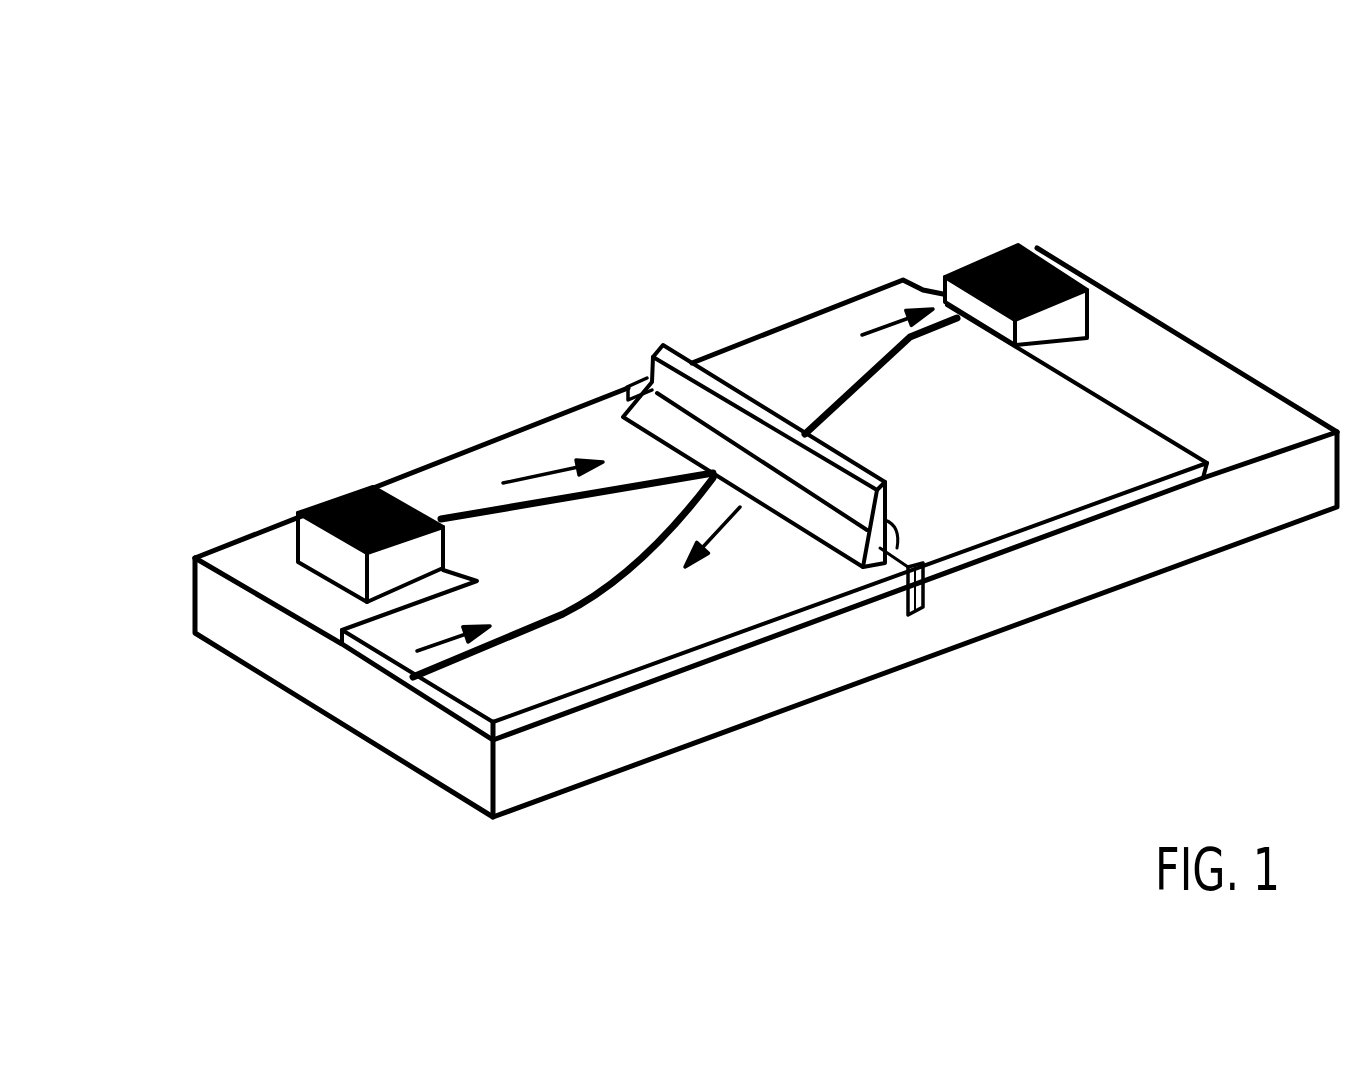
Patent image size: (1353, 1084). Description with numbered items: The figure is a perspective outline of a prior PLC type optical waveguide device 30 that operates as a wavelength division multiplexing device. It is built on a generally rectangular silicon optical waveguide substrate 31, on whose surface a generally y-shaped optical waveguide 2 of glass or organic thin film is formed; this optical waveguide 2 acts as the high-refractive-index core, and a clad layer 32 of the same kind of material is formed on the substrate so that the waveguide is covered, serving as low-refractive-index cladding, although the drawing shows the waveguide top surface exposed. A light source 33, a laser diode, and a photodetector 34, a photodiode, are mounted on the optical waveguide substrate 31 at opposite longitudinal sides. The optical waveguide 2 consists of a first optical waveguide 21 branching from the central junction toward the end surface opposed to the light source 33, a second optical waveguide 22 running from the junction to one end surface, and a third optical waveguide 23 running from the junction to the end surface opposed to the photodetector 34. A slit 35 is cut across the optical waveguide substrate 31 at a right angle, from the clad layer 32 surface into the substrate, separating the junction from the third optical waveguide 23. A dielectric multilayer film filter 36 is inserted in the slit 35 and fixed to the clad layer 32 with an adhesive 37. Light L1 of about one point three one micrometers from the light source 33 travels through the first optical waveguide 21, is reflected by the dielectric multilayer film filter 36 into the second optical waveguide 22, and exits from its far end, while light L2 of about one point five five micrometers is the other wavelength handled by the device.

The optical waveguide 2 is at (637, 482).
The first optical waveguide 21 is at (467, 502).
The second optical waveguide 22 is at (517, 640).
The third optical waveguide 23 is at (845, 392).
The optical waveguide device 30 is at (748, 491).
The optical waveguide substrate 31 is at (1085, 568).
The clad layer 32 is at (845, 607).
The light source 33 is at (304, 512).
The photodetector 34 is at (1000, 252).
The slit 35 is at (920, 603).
The dielectric multilayer film filter 36 is at (713, 383).
The adhesive 37 is at (662, 418).
The light L1 is at (537, 473).
The light L2 is at (880, 340).